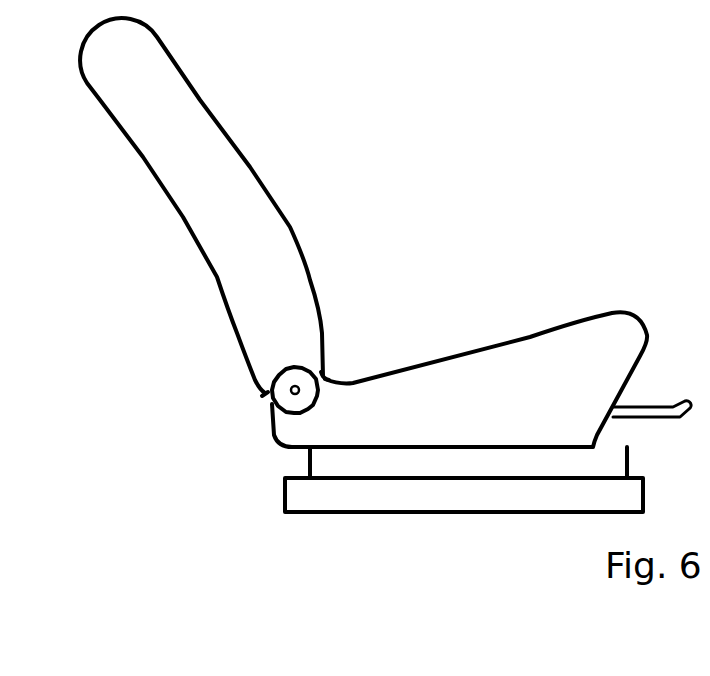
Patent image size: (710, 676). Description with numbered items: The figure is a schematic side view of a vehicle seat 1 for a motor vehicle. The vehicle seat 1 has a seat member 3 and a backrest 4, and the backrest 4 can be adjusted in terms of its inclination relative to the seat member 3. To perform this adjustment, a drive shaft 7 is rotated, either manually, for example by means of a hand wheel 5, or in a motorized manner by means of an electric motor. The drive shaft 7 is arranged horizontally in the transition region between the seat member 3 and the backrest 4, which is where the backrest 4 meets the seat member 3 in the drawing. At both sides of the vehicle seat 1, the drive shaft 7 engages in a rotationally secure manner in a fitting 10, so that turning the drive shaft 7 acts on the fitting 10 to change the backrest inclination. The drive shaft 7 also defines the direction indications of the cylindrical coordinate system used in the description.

The vehicle seat 1 is at (344, 166).
The seat member 3 is at (492, 360).
The backrest 4 is at (184, 132).
The hand wheel 5 is at (330, 372).
The drive shaft 7 is at (293, 393).
The fitting 10 is at (258, 397).